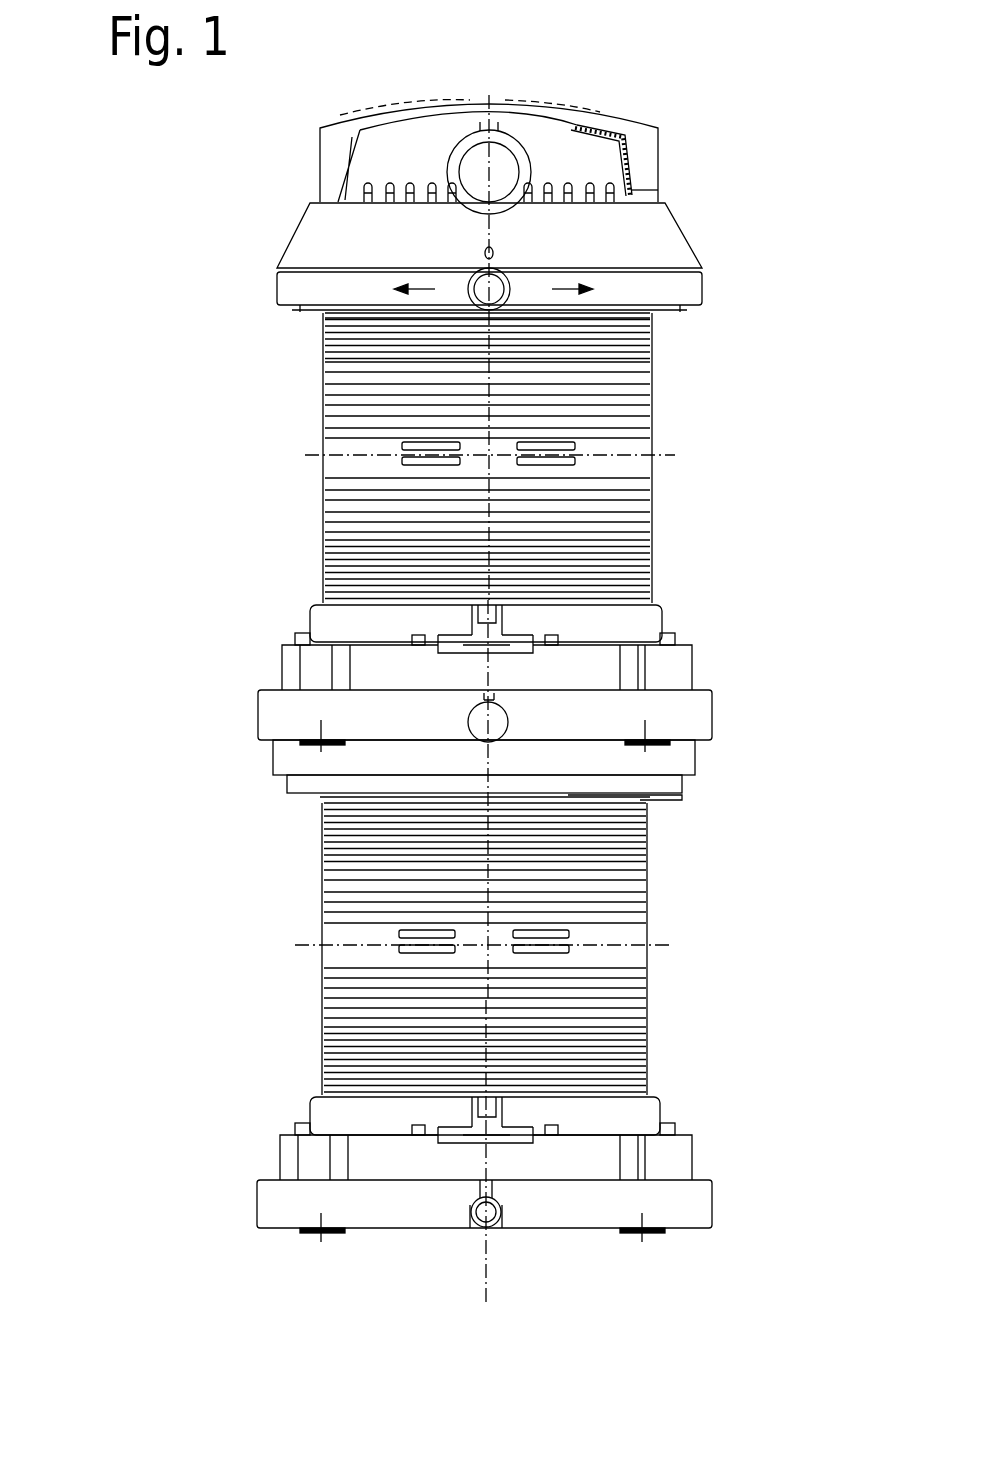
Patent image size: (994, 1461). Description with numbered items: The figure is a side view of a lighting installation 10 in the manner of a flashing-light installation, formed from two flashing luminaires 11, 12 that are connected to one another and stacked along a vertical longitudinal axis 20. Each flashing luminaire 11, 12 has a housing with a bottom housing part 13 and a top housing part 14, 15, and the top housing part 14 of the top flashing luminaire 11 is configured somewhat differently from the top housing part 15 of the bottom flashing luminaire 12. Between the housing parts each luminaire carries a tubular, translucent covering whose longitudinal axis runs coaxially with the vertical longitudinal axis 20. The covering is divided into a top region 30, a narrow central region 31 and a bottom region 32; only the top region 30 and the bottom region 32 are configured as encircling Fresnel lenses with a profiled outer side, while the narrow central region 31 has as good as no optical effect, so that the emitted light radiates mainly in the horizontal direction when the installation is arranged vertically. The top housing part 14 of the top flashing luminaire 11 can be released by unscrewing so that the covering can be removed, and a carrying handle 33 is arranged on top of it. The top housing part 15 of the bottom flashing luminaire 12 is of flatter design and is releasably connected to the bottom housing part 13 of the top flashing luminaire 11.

The lighting installation 10 is at (710, 100).
The top flashing luminaire 11 is at (242, 392).
The bottom flashing luminaire 12 is at (256, 908).
The bottom housing part 13 is at (236, 688).
The top housing part 14 is at (268, 226).
The top housing part 15 is at (242, 762).
The vertical longitudinal axis 20 is at (490, 95).
The top region 30 is at (653, 360).
The narrow central region 31 is at (652, 466).
The bottom region 32 is at (652, 548).
The carrying handle 33 is at (330, 128).